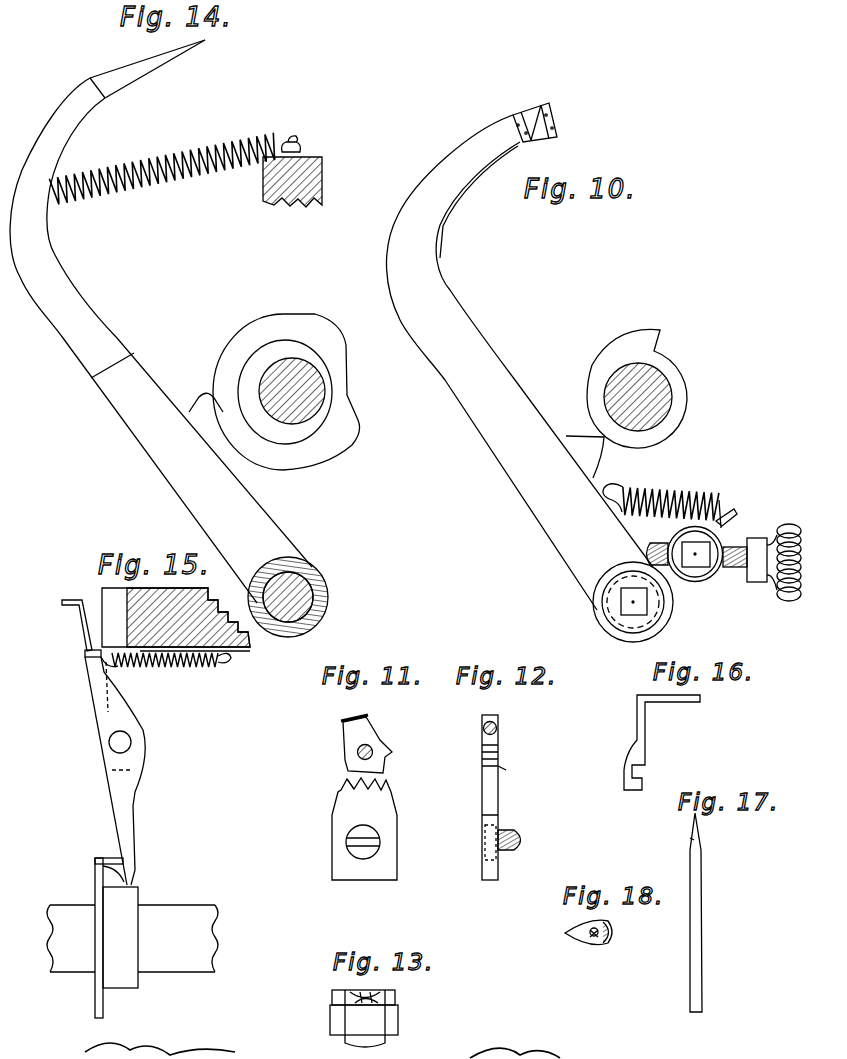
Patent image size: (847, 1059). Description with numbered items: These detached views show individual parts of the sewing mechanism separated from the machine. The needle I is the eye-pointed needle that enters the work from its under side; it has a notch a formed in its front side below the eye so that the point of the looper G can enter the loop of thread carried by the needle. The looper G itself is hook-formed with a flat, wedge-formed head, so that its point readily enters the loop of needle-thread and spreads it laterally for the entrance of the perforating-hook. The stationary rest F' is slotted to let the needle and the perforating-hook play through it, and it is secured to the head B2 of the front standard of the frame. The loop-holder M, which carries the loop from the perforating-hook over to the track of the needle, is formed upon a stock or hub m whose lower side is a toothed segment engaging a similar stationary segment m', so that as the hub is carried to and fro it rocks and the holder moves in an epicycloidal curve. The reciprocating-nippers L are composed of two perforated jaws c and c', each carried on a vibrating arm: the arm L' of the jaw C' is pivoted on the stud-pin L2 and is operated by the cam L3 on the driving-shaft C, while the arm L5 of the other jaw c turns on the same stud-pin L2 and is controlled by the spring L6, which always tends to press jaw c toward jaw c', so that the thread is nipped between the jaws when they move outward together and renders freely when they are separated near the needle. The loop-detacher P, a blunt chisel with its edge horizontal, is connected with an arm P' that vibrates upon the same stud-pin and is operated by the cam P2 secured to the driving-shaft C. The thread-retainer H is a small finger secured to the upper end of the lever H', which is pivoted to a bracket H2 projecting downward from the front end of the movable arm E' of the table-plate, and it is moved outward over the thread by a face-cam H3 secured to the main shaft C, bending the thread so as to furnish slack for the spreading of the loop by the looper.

In FIG. 14, the loop-detacher P is at (161, 321).
In FIG. 14, the arm of loop-detacher P' is at (115, 380).
In FIG. 14, the cam P2 is at (274, 392).
In FIG. 14, the jaw C' is at (292, 391).
In FIG. 10, the jaw C' is at (638, 397).
In FIG. 14, the head of front standard B2 is at (288, 597).
In FIG. 10, the reciprocating-nippers L is at (535, 111).
In FIG. 10, the stud-pin L2 is at (532, 122).
In FIG. 10, the jaw c is at (519, 115).
In FIG. 10, the jaw c' is at (556, 122).
In FIG. 10, the arm L5 is at (480, 392).
In FIG. 10, the cam L3 is at (645, 316).
In FIG. 10, the arm L' is at (585, 457).
In FIG. 10, the spring L6 is at (690, 464).
In FIG. 15, the thread-retainer H is at (71, 614).
In FIG. 15, the lever H' is at (105, 729).
In FIG. 15, the bracket H2 is at (147, 688).
In FIG. 15, the face-cam H3 is at (82, 856).
In FIG. 15, the arm of table-plate E' is at (176, 619).
In FIG. 15, the main shaft C is at (132, 938).
In FIG. 11, the loop-holder M is at (342, 710).
In FIG. 12, the loop-holder M is at (498, 703).
In FIG. 13, the loop-holder M is at (336, 986).
In FIG. 11, the stock or hub m is at (359, 747).
In FIG. 12, the stock or hub m is at (499, 727).
In FIG. 13, the stock or hub m is at (382, 996).
In FIG. 11, the stationary segment m' is at (357, 791).
In FIG. 12, the stationary segment m' is at (509, 772).
In FIG. 16, the bracket plate F' is at (662, 742).
In FIG. 17, the needle I is at (722, 866).
In FIG. 17, the notch a is at (690, 840).
In FIG. 18, the looper G is at (588, 946).